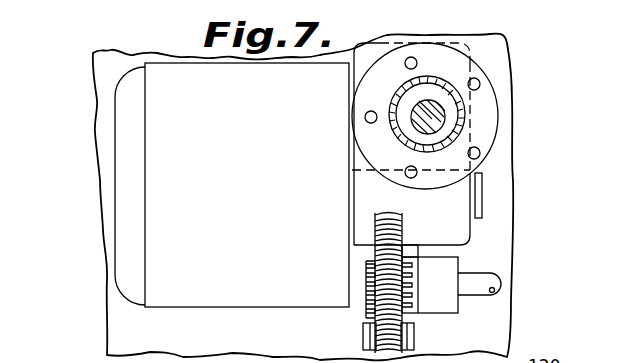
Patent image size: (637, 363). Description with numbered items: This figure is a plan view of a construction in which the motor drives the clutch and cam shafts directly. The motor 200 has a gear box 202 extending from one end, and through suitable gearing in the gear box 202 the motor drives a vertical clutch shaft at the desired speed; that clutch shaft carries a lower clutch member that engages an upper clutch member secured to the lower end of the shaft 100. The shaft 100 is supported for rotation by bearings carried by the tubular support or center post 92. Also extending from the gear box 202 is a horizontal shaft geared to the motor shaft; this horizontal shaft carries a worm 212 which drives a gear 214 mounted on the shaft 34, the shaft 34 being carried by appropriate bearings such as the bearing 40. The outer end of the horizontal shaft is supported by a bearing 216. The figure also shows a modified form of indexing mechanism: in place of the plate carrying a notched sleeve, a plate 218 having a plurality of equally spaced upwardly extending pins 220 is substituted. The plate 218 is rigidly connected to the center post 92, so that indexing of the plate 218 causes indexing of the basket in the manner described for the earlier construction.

The motor 200 is at (157, 168).
The gear box 202 is at (455, 213).
The plate 218 is at (485, 95).
The pins 220 is at (478, 80).
The center post 92 is at (460, 110).
The shaft 100 is at (440, 125).
The gear 214 is at (374, 223).
The worm 212 is at (372, 314).
The bearing 216 is at (415, 334).
The bearing 40 is at (448, 303).
The shaft 34 is at (478, 283).